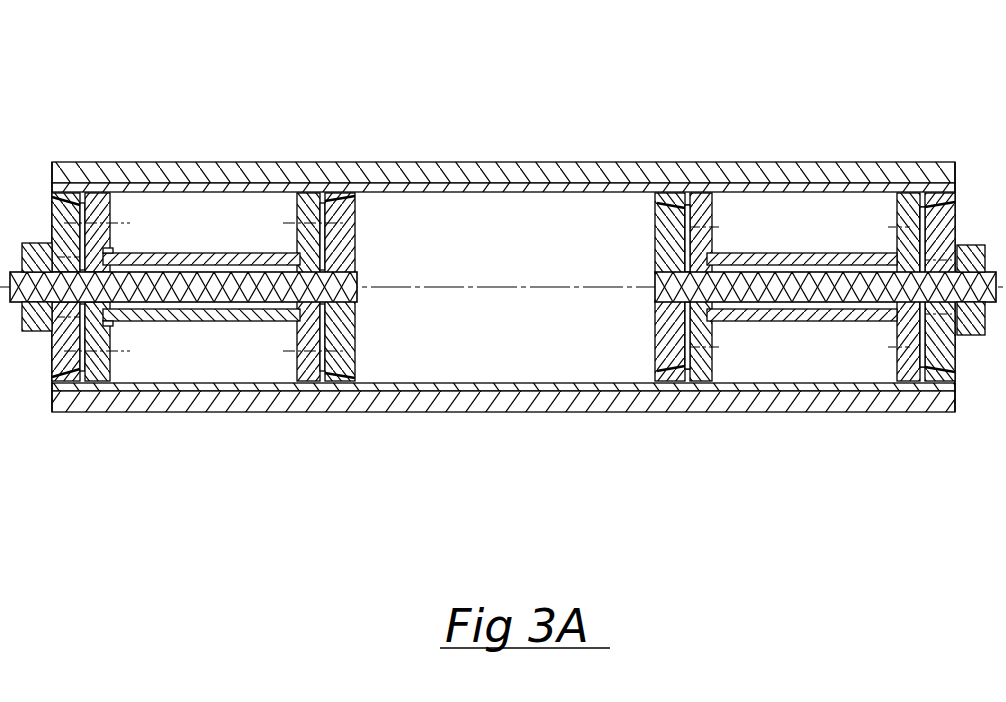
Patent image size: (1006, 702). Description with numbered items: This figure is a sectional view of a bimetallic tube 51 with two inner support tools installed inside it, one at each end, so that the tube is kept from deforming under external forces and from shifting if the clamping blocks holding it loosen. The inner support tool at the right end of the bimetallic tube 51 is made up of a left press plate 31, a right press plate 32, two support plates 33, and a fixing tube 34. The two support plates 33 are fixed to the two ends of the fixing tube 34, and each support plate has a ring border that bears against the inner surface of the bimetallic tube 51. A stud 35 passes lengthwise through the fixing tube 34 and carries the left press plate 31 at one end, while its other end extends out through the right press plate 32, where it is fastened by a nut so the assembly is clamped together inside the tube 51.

The bimetallic tube 51 is at (503, 248).
The left press plate 31 is at (603, 224).
The right press plate 32 is at (861, 357).
The support plates 33 is at (720, 193).
The fixing tube 34 is at (778, 387).
The stud 35 is at (503, 396).